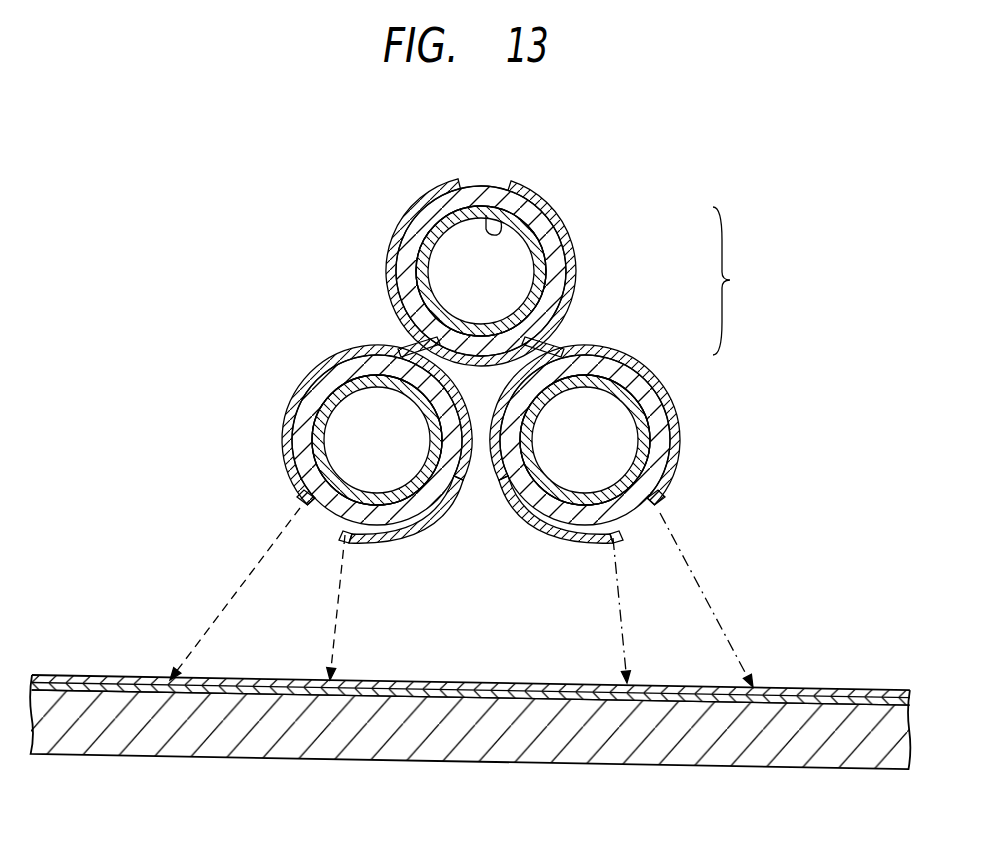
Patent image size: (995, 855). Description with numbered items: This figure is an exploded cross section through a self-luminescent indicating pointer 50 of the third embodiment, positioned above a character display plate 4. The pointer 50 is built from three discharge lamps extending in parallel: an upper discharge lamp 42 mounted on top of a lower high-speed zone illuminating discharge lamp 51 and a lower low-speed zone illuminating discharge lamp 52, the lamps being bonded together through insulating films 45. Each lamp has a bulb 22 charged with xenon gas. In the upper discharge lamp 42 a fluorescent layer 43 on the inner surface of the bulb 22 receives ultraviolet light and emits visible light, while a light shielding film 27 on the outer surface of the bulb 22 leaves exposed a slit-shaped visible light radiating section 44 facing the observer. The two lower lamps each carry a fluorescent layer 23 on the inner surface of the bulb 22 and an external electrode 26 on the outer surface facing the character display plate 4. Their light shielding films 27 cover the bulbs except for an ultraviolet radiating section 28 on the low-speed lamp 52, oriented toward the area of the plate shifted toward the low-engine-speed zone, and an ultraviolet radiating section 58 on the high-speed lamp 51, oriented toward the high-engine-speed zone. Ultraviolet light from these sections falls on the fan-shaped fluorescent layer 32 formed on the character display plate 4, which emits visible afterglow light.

The character display plate 4 is at (852, 703).
The bulb 22 is at (547, 217).
The fluorescent layer 23 is at (432, 445).
The external electrode 26 is at (438, 338).
The light shielding film 27 is at (418, 208).
The ultraviolet radiating section 28 is at (302, 520).
The fan-shaped fluorescent layer 32 is at (478, 680).
The upper discharge lamp 42 is at (598, 265).
The fluorescent layer 43 is at (492, 212).
The visible light radiating section 44 is at (474, 180).
The insulating film 45 is at (400, 347).
The self-luminescent indicating pointer 50 is at (741, 281).
The high-speed zone illuminating discharge lamp 51 is at (651, 354).
The low-speed zone illuminating discharge lamp 52 is at (324, 337).
The ultraviolet radiating section 58 is at (657, 513).